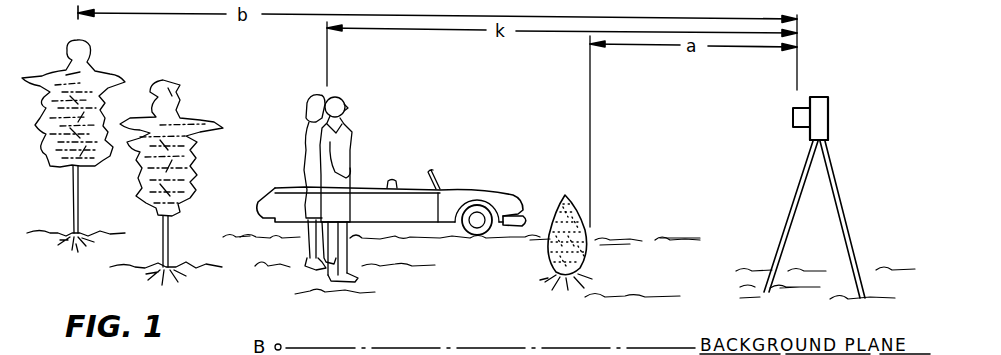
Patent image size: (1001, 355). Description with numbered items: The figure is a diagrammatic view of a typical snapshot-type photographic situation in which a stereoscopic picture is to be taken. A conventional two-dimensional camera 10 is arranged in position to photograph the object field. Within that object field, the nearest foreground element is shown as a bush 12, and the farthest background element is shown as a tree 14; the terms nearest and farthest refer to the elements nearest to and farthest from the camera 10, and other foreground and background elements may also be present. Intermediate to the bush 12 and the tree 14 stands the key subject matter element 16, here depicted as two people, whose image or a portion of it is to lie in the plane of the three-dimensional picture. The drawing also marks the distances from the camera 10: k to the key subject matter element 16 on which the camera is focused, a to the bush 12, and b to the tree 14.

The camera 10 is at (832, 116).
The bush 12 is at (583, 208).
The tree 14 is at (103, 57).
The key subject matter element 16 is at (365, 98).